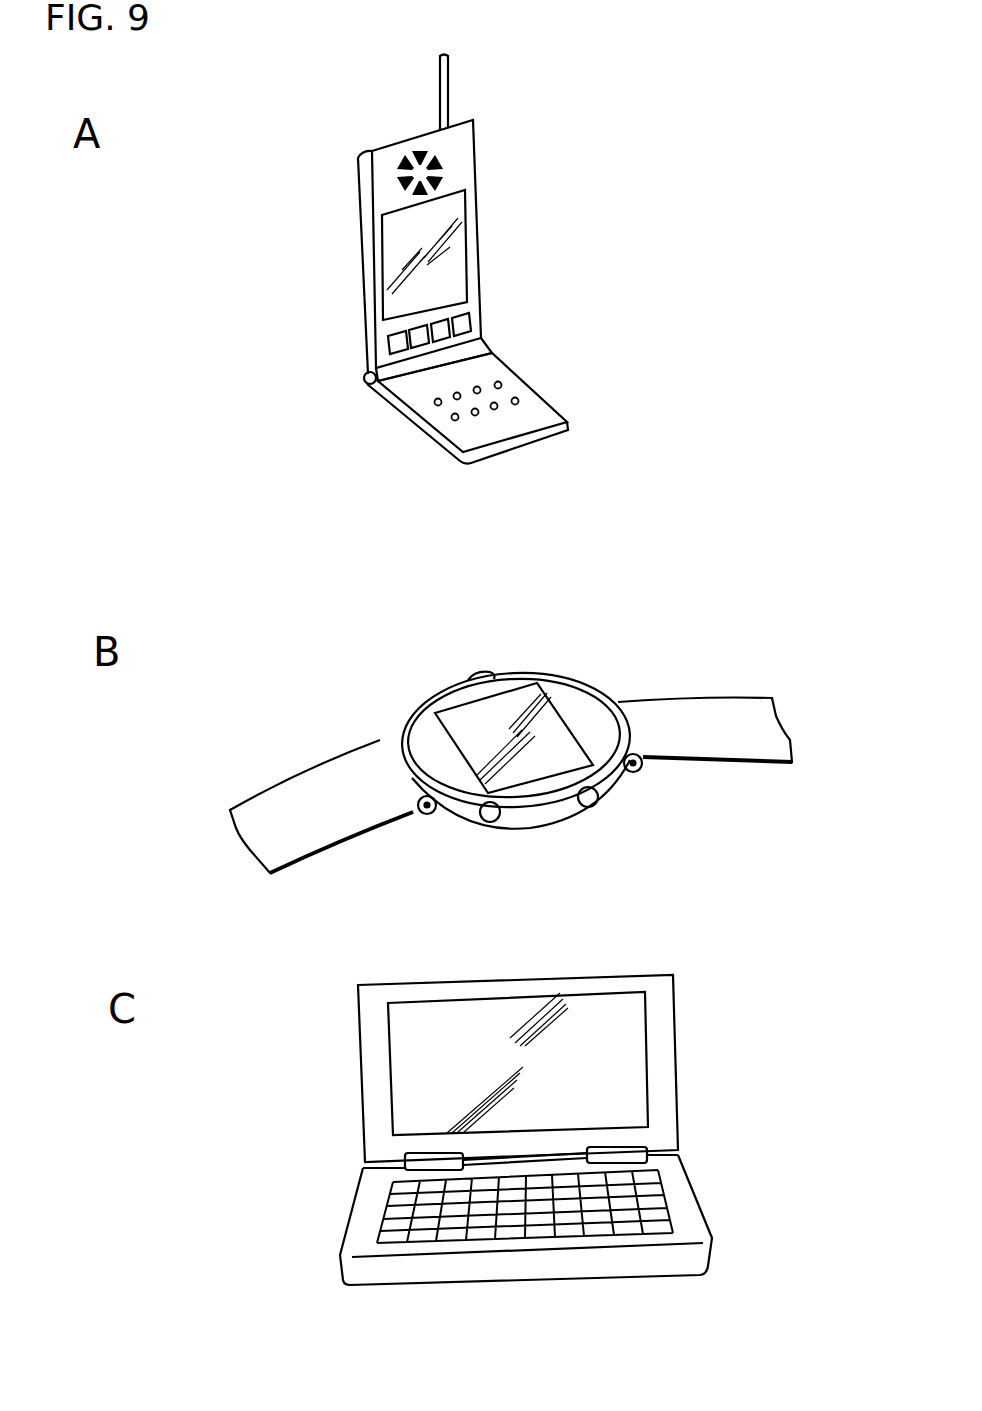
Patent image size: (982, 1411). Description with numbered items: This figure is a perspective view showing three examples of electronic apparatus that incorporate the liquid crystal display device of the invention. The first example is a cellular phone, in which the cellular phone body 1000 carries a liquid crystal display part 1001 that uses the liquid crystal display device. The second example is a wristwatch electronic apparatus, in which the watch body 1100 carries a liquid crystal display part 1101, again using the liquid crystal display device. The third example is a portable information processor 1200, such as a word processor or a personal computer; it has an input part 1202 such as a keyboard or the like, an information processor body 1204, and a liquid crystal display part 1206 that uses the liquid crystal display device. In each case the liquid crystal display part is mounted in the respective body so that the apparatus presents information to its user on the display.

The cellular phone body 1000 is at (514, 172).
The liquid crystal display part 1001 is at (450, 268).
The watch body 1100 is at (528, 672).
The liquid crystal display part 1101 is at (557, 740).
The information processor 1200 is at (700, 1012).
The input part 1202 is at (402, 1212).
The information processor body 1204 is at (683, 1257).
The liquid crystal display part 1206 is at (632, 1087).